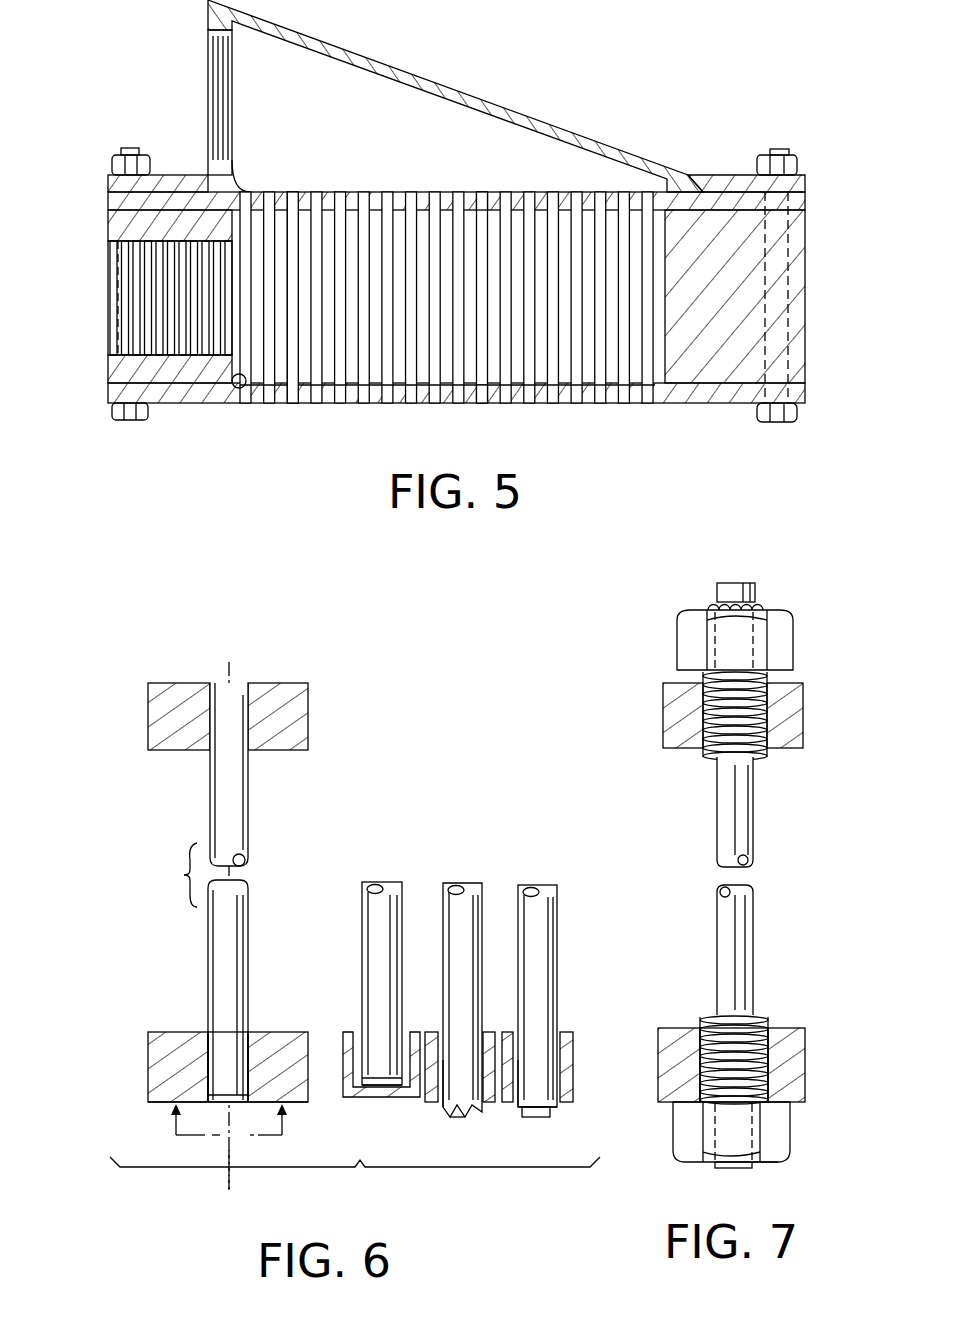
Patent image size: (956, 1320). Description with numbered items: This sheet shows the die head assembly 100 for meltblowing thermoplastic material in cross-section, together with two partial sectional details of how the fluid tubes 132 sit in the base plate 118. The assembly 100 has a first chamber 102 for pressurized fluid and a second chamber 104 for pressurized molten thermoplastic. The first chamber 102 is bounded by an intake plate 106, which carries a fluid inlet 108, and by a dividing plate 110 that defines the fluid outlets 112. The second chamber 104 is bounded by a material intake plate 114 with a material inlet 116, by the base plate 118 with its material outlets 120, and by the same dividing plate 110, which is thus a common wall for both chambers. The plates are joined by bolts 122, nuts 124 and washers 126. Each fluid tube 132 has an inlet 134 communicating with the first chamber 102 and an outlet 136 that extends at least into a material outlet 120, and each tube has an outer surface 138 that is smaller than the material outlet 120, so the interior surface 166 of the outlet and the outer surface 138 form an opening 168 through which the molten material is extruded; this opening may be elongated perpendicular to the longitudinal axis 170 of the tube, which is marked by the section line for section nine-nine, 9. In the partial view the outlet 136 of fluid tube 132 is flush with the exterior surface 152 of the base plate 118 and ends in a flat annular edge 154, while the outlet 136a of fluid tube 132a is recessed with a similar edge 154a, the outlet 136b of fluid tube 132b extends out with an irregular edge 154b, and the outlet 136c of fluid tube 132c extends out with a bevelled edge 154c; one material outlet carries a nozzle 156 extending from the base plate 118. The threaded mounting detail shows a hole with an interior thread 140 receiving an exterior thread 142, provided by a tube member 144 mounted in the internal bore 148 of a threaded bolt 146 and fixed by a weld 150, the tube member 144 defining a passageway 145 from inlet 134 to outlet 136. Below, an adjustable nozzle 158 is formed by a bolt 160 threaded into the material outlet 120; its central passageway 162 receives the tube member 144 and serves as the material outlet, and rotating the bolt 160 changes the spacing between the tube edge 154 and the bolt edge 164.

In FIG. 5, the die head assembly 100 is at (90, 103).
In FIG. 5, the first chamber 102 is at (410, 149).
In FIG. 5, the second chamber 104 is at (300, 322).
In FIG. 5, the intake plate 106 is at (125, 185).
In FIG. 5, the fluid inlet 108 is at (212, 62).
In FIG. 5, the dividing plate 110 is at (110, 196).
In FIG. 6, the dividing plate 110 is at (163, 716).
In FIG. 5, the fluid outlet 112 is at (247, 187).
In FIG. 5, the material intake plate 114 is at (108, 228).
In FIG. 5, the material inlet 116 is at (108, 265).
In FIG. 5, the base plate 118 is at (112, 390).
In FIG. 6, the base plate 118 is at (158, 1063).
In FIG. 7, the base plate 118 is at (808, 1056).
In FIG. 5, the material outlet 120 is at (232, 390).
In FIG. 6, the material outlet 120 is at (246, 1035).
In FIG. 7, the material outlet 120 is at (762, 1048).
In FIG. 5, the bolt 122 is at (798, 412).
In FIG. 5, the nut 124 is at (790, 155).
In FIG. 5, the washer 126 is at (800, 178).
In FIG. 5, the fluid tube 132 is at (293, 200).
In FIG. 6, the fluid tube 132 is at (245, 787).
In FIG. 7, the fluid tube 132 is at (702, 795).
In FIG. 6, the fluid tube 132a is at (367, 912).
In FIG. 6, the fluid tube 132b is at (448, 912).
In FIG. 6, the fluid tube 132c is at (523, 912).
In FIG. 5, the inlet 134 is at (480, 196).
In FIG. 5, the outlet 136 is at (480, 402).
In FIG. 6, the outlet 136 is at (232, 1035).
In FIG. 6, the outlet 136a is at (372, 1100).
In FIG. 6, the outlet 136b is at (462, 1110).
In FIG. 6, the outlet 136c is at (532, 1108).
In FIG. 6, the outer surface 138 is at (218, 855).
In FIG. 7, the interior thread 140 is at (802, 712).
In FIG. 7, the exterior thread 142 is at (768, 680).
In FIG. 7, the tube member 144 is at (750, 792).
In FIG. 7, the passageway 145 is at (752, 862).
In FIG. 7, the threaded bolt 146 is at (788, 637).
In FIG. 7, the internal bore 148 is at (780, 613).
In FIG. 7, the weld 150 is at (760, 600).
In FIG. 6, the exterior surface 152 is at (160, 1102).
In FIG. 6, the edge 154 is at (210, 1105).
In FIG. 7, the edge 154 is at (737, 1168).
In FIG. 6, the edge 154a is at (376, 1104).
In FIG. 6, the edge 154b is at (468, 1118).
In FIG. 6, the edge 154c is at (514, 1122).
In FIG. 6, the nozzle 156 is at (568, 1103).
In FIG. 7, the adjustable nozzle 158 is at (815, 1119).
In FIG. 7, the bolt 160 is at (785, 1142).
In FIG. 7, the central passageway 162 is at (755, 1000).
In FIG. 7, the edge 164 is at (773, 1163).
In FIG. 6, the interior surface 166 is at (208, 1035).
In FIG. 6, the opening 168 is at (205, 1040).
In FIG. 6, the longitudinal axis 170 is at (238, 1160).
In FIG. 6, the section line 9 is at (229, 1129).